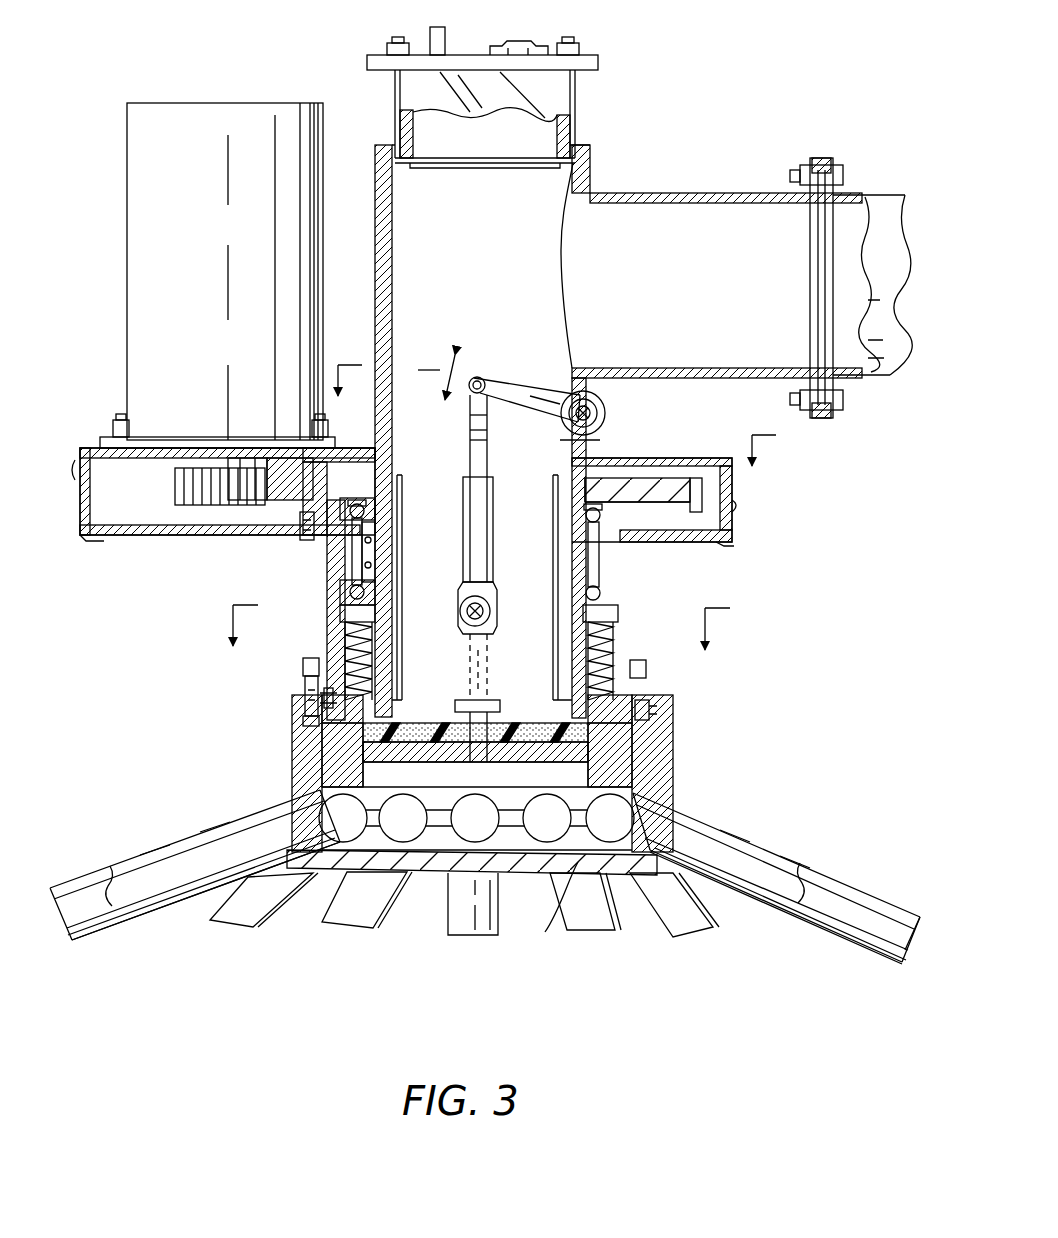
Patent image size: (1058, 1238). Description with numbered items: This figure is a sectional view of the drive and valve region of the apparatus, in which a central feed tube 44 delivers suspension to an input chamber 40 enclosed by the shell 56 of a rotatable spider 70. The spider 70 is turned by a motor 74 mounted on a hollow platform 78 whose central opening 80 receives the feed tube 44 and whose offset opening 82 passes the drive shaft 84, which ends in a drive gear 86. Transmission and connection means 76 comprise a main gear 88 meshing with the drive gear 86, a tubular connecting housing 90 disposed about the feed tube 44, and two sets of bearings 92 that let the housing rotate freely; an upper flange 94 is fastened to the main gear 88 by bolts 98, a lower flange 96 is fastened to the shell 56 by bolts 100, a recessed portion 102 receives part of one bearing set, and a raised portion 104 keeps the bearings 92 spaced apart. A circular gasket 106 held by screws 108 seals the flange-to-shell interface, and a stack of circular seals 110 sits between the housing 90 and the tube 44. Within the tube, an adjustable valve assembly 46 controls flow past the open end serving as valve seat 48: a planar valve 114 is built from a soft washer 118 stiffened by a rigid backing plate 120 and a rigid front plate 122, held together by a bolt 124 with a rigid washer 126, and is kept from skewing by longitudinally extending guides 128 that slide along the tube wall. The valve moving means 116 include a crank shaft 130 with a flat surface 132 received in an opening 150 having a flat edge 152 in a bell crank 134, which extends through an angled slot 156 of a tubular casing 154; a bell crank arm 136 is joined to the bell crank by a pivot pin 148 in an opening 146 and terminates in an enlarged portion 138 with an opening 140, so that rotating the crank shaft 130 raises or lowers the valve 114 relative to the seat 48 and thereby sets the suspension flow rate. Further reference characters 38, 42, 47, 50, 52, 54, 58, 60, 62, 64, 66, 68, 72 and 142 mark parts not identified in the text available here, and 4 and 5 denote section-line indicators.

The pipe 38 is at (876, 210).
The input chamber 40 is at (560, 858).
The discharge chute end 42 is at (900, 963).
The central feed tube 44 is at (376, 154).
The adjustable valve assembly 46 is at (559, 764).
The top cap assembly 47 is at (463, 78).
The valve seat 48 is at (372, 758).
The cutaway edge 50 is at (566, 238).
The lateral pipe 52 is at (600, 192).
The pipe flange 54 is at (824, 158).
The shell 56 is at (660, 716).
The base housing wall 58 is at (650, 774).
The support strut 60 is at (548, 930).
The container cavity 62 is at (442, 800).
The chute rail 64 is at (135, 926).
The leg 66 is at (318, 890).
The chute 68 is at (140, 856).
The spider 70 is at (648, 748).
The ampoules 72 is at (520, 820).
The motor 74 is at (220, 110).
The transmission and connection means 76 is at (332, 560).
The hollow platform 78 is at (96, 450).
The central opening 80 is at (326, 442).
The offset opening 82 is at (162, 440).
The drive shaft 84 is at (208, 458).
The drive gear 86 is at (182, 500).
The main gear 88 is at (262, 458).
The tubular connecting housing 90 is at (345, 596).
The bearings 92 is at (364, 510).
The upper flange 94 is at (305, 528).
The lower flange 96 is at (305, 686).
The bolts 98 is at (340, 516).
The bolts 100 is at (310, 658).
The recessed portion 102 is at (368, 480).
The raised portion 104 is at (376, 548).
The circular gasket 106 is at (324, 700).
The screws 108 is at (330, 715).
The circular seals 110 is at (372, 652).
The planar valve 114 is at (415, 745).
The valve moving means 116 is at (494, 484).
The soft washer 118 is at (430, 748).
The rigid backing plate 120 is at (426, 728).
The rigid front plate 122 is at (335, 745).
The bolt 124 is at (497, 708).
The rigid washer 126 is at (488, 690).
The guides 128 is at (560, 524).
The crank shaft 130 is at (592, 436).
The flat surface 132 is at (495, 458).
The bell crank 134 is at (483, 382).
The bell crank arm 136 is at (463, 452).
The enlarged portion 138 is at (497, 600).
The opening 140 is at (490, 618).
The pin 142 is at (483, 608).
The opening 146 is at (455, 358).
The pivot pin 148 is at (494, 430).
The opening 150 is at (600, 410).
The flat edge 152 is at (547, 396).
The tubular casing 154 is at (596, 408).
The angled slot 156 is at (575, 392).
The section line 4 is at (554, 402).
The section line 5 is at (478, 615).